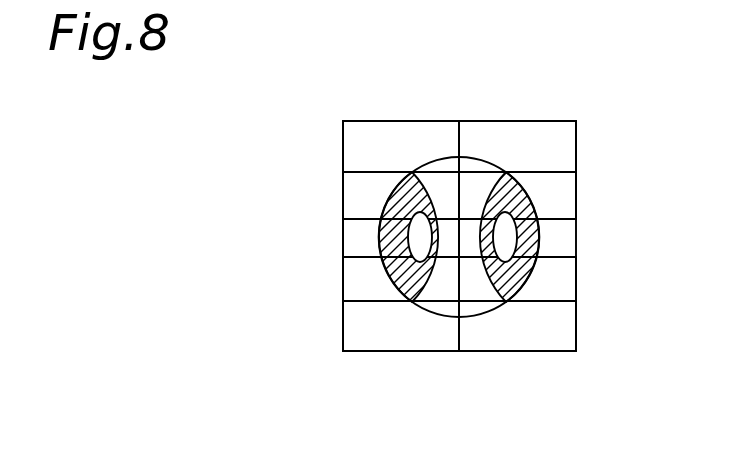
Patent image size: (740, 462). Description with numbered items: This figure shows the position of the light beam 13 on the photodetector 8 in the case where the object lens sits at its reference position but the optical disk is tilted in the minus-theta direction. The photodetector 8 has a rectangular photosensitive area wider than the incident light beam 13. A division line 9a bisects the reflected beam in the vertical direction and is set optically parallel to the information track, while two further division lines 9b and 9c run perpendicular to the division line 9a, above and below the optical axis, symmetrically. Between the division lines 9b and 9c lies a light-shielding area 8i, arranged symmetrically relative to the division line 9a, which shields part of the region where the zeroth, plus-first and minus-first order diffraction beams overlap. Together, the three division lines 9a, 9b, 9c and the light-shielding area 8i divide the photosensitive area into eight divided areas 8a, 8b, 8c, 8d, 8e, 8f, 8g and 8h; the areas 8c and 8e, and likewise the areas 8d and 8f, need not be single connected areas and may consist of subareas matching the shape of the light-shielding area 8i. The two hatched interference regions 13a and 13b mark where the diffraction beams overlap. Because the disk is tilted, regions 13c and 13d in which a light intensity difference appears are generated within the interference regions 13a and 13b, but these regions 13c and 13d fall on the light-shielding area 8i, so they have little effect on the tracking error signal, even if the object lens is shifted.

The photodetector 8 is at (332, 147).
The divided area 8a is at (390, 140).
The divided area 8b is at (525, 147).
The divided area 8c is at (363, 198).
The divided area 8d is at (563, 193).
The divided area 8e is at (370, 275).
The divided area 8f is at (563, 283).
The divided area 8g is at (428, 332).
The divided area 8h is at (525, 325).
The light-shielding area 8i is at (353, 237).
The division line 9a is at (460, 121).
The division line 9b is at (576, 173).
The division line 9c is at (577, 300).
The light beam 13 is at (443, 157).
The interference region 13a is at (412, 265).
The interference region 13b is at (510, 174).
The light intensity difference region 13c is at (418, 259).
The light intensity difference region 13d is at (507, 243).